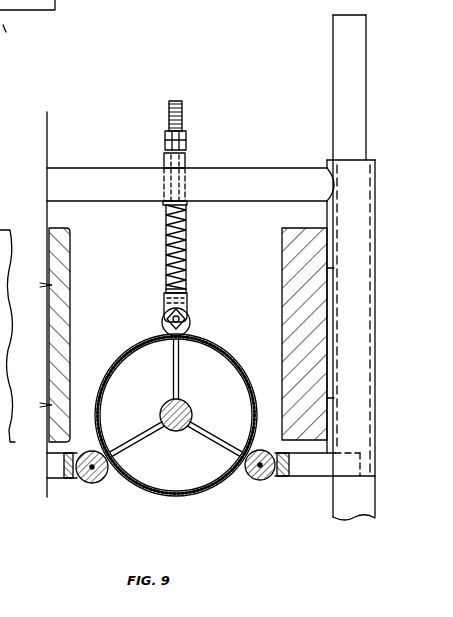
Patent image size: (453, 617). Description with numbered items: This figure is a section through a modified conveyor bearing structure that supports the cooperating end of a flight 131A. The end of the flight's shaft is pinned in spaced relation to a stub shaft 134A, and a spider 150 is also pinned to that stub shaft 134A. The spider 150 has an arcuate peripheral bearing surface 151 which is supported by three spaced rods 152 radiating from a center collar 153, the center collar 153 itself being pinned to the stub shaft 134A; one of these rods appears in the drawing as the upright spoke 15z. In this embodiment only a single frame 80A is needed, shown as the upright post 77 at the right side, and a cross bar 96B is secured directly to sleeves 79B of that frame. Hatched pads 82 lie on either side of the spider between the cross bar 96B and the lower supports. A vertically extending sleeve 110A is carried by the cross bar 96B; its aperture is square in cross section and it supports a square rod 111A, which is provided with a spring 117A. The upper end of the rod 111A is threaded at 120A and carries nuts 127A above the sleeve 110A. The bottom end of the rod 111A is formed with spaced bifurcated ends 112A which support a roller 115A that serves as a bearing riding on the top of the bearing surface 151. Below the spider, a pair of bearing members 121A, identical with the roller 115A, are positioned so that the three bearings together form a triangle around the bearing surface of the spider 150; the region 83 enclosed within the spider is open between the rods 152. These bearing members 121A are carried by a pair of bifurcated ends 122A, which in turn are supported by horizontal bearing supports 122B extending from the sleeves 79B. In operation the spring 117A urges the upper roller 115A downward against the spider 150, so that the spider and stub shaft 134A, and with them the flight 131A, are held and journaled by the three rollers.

The post 77 is at (345, 58).
The frame 80A is at (330, 118).
The cross bar 96B is at (97, 172).
The threaded end 120A is at (183, 104).
The nuts 127A is at (163, 138).
The vertically extending sleeve 110A is at (186, 160).
The square rod 111A is at (186, 228).
The spring 117A is at (186, 243).
The bifurcated ends 112A is at (163, 305).
The roller 115A is at (190, 320).
The pad 82 is at (64, 247).
The spider 150 is at (228, 345).
The sleeves 79B is at (366, 372).
The spoke 15z is at (173, 380).
The flight 131A is at (147, 416).
The stub shaft 134A is at (187, 404).
The center collar 153 is at (165, 433).
The rods 152 is at (210, 440).
The bifurcated ends 122A is at (80, 482).
The bearing members 121A is at (94, 484).
The wheel interior 83 is at (161, 482).
The arcuate peripheral bearing surface 151 is at (222, 490).
The horizontal bearing supports 122B is at (320, 470).